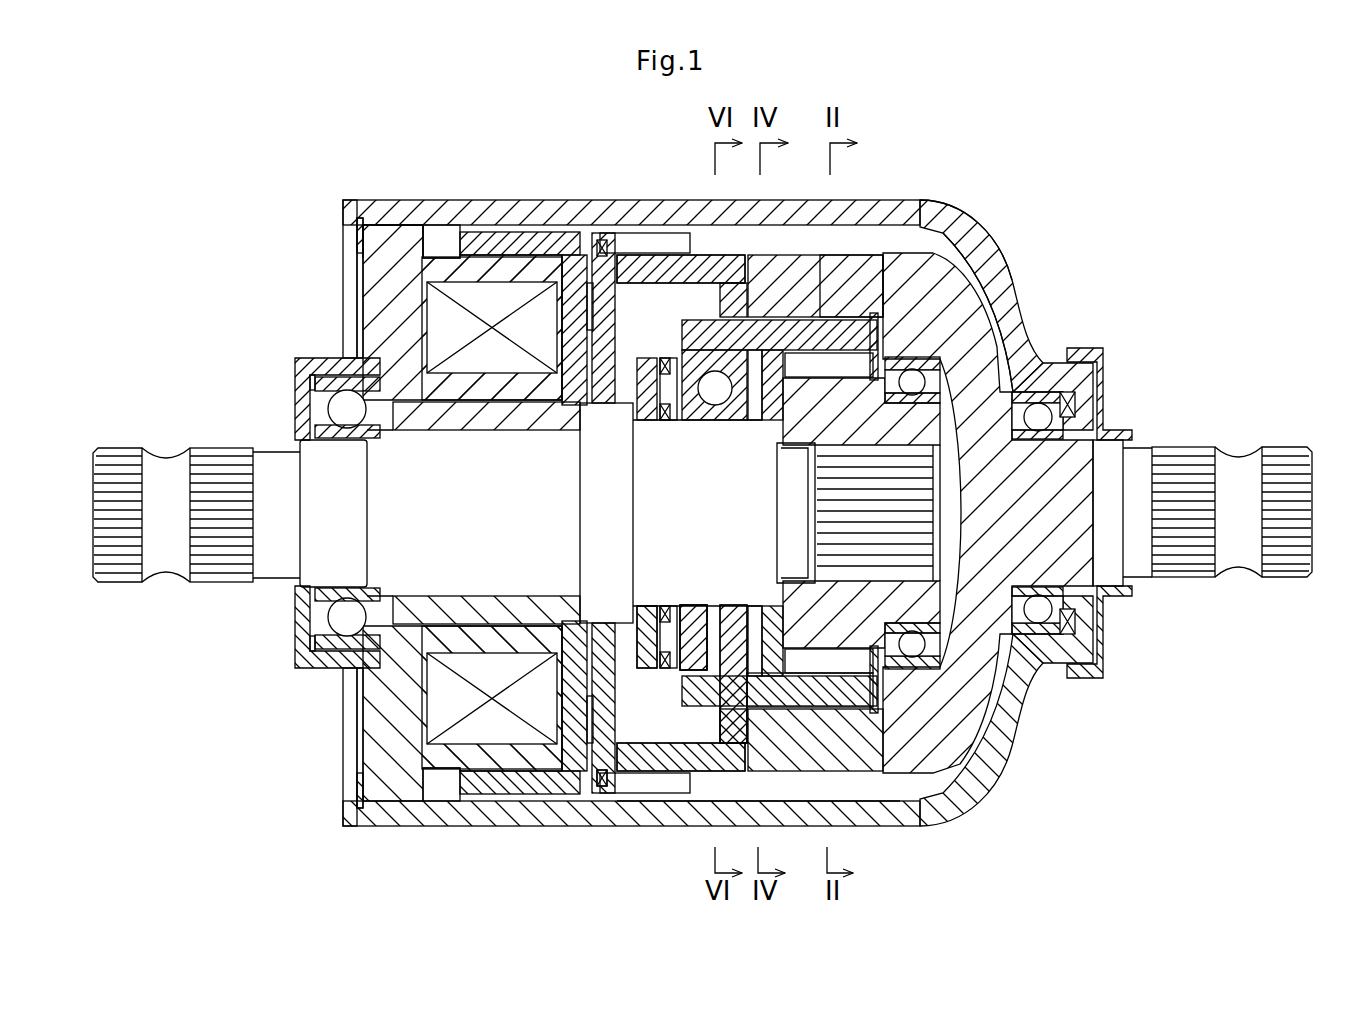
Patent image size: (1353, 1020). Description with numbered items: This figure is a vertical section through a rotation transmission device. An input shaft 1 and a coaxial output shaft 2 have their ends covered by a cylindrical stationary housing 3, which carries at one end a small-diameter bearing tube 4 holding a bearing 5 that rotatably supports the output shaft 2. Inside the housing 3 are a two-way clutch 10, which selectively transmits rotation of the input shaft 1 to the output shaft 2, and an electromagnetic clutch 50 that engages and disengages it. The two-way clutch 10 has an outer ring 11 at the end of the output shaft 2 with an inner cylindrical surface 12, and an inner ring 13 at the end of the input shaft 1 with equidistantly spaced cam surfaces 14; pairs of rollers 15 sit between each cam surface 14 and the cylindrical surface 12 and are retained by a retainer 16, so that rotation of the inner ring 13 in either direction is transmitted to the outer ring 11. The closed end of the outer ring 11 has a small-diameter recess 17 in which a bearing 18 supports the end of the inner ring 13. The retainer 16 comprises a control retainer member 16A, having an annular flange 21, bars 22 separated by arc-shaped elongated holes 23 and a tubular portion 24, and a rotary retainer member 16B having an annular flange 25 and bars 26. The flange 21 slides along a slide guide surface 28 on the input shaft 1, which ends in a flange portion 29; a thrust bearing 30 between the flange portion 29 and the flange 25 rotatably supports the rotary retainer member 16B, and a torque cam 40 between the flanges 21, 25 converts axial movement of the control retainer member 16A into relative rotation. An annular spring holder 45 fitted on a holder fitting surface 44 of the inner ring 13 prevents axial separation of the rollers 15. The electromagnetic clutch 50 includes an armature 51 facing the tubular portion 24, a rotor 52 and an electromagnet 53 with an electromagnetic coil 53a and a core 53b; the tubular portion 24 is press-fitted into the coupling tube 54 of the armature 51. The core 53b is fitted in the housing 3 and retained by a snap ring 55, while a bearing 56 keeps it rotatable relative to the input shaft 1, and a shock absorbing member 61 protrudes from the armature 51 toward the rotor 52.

The input shaft 1 is at (115, 470).
The output shaft 2 is at (1143, 457).
The housing 3 is at (463, 202).
The bearing tube 4 is at (1057, 380).
The bearing 5 is at (1102, 383).
The two-way clutch 10 is at (912, 250).
The outer ring 11 is at (890, 263).
The cylindrical surface 12 is at (845, 318).
The inner ring 13 is at (940, 355).
The cam surfaces 14 is at (945, 285).
The rollers 15 is at (962, 210).
The retainer 16 is at (705, 250).
The control retainer member 16A is at (705, 800).
The rotary retainer member 16B is at (680, 317).
The small-diameter recess 17 is at (945, 677).
The bearing 18 is at (897, 665).
The annular flange 21 is at (740, 700).
The bars 22 is at (833, 693).
The elongated holes 23 is at (770, 330).
The tubular portion 24 is at (634, 770).
The annular flange 25 is at (680, 422).
The bars 26 is at (835, 322).
The slide guide surface 28 is at (692, 612).
The flange portion 29 is at (605, 557).
The thrust bearing 30 is at (665, 608).
The torque cam 40 is at (715, 407).
The holder fitting surface 44 is at (775, 640).
The annular spring holder 45 is at (690, 612).
The electromagnetic clutch 50 is at (520, 245).
The armature 51 is at (593, 270).
The rotor 52 is at (527, 228).
The electromagnet 53 is at (437, 250).
The electromagnetic coil 53a is at (443, 330).
The core 53b is at (388, 237).
The coupling tube 54 is at (652, 240).
The snap ring 55 is at (360, 237).
The bearing 56 is at (340, 625).
The shock absorbing member 61 is at (598, 788).